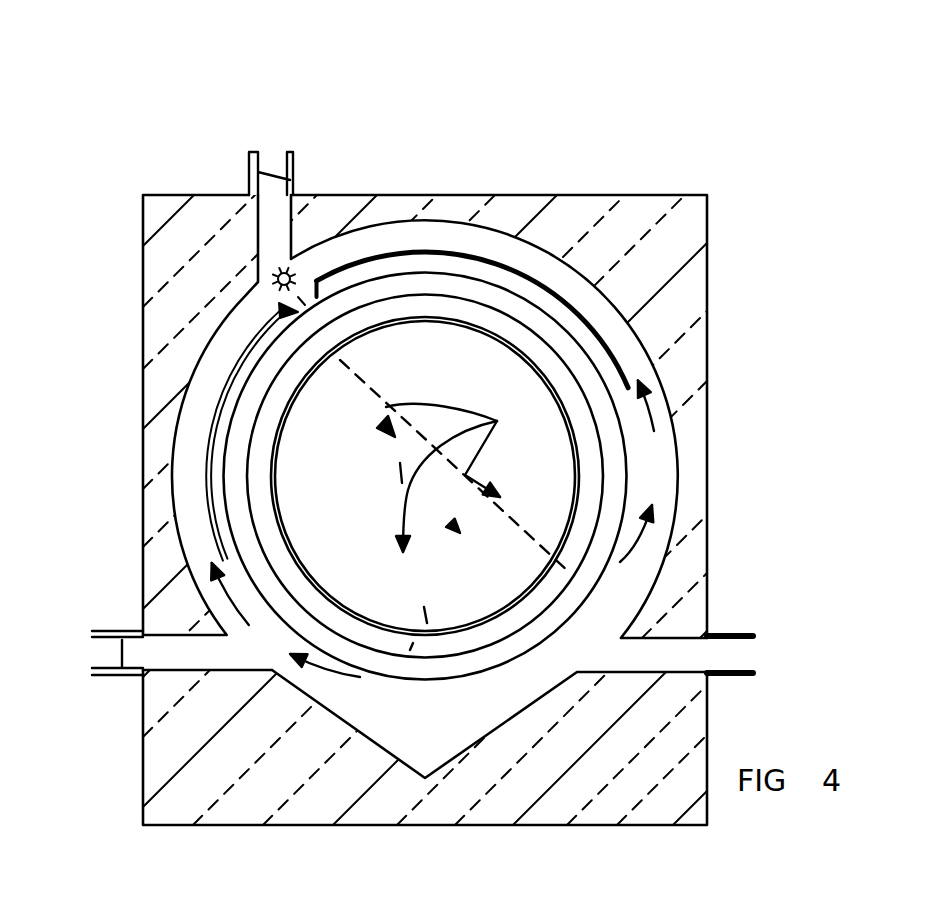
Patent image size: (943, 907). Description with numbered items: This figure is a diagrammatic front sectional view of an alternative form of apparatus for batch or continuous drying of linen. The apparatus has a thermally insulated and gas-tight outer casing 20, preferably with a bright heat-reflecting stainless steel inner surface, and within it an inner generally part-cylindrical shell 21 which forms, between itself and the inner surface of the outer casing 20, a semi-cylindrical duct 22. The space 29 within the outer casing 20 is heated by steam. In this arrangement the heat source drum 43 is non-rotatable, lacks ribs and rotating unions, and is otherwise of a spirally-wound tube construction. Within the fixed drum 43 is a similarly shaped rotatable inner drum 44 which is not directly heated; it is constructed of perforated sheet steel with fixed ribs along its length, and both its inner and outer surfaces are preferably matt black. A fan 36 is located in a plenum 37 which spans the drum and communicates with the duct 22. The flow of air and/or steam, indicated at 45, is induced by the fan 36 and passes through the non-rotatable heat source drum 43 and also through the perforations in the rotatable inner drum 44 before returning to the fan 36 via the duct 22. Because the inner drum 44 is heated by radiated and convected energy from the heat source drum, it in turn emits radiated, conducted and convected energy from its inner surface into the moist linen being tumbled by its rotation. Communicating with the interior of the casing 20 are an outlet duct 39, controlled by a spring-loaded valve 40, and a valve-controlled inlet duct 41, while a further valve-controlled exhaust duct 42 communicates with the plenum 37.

The outer casing 20 is at (188, 205).
The inner part-cylindrical shell 21 is at (577, 291).
The duct 22 is at (622, 312).
The space within the outer casing 29 is at (415, 748).
The fan 36 is at (277, 277).
The plenum 37 is at (282, 318).
The outlet duct 39 is at (137, 632).
The spring-loaded valve 40 is at (122, 655).
The inlet duct 41 is at (731, 643).
The exhaust duct 42 is at (272, 182).
The non-rotatable drum 43 is at (593, 373).
The rotatable inner drum 44 is at (425, 317).
The flow of air and/or steam 45 is at (725, 458).